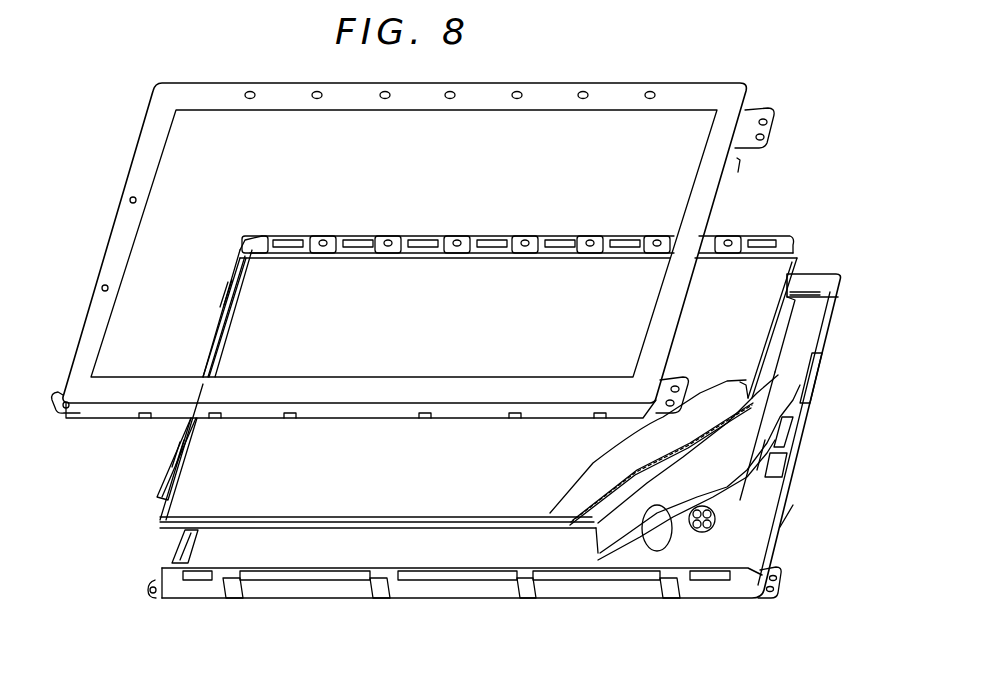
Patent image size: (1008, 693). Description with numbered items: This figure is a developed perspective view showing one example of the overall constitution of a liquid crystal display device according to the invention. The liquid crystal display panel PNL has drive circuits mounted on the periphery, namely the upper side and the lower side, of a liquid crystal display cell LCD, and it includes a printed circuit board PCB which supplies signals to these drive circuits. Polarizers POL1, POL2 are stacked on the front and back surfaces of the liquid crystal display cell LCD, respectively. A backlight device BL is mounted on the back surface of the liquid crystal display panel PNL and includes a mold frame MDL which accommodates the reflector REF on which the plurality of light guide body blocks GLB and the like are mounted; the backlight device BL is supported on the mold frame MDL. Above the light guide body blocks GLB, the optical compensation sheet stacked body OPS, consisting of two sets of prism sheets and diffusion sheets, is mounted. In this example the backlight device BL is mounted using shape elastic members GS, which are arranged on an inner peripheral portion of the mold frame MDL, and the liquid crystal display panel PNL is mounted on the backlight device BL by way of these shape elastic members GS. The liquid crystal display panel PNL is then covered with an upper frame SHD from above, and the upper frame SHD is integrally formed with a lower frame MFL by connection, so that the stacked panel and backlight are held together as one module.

The upper frame SHD is at (740, 86).
The liquid crystal display panel PNL is at (747, 214).
The printed circuit board PCB is at (455, 236).
The shape elastic members GS is at (178, 550).
The mold frame MDL is at (777, 461).
The lower frame MFL is at (780, 522).
The reflector REF is at (727, 522).
The backlight device BL is at (323, 610).
The polarizer POL1 is at (587, 520).
The polarizer POL2 is at (483, 503).
The liquid crystal display cell LCD is at (560, 510).
The optical compensation sheet stacked body OPS is at (663, 542).
The light guide body block GLB is at (706, 534).